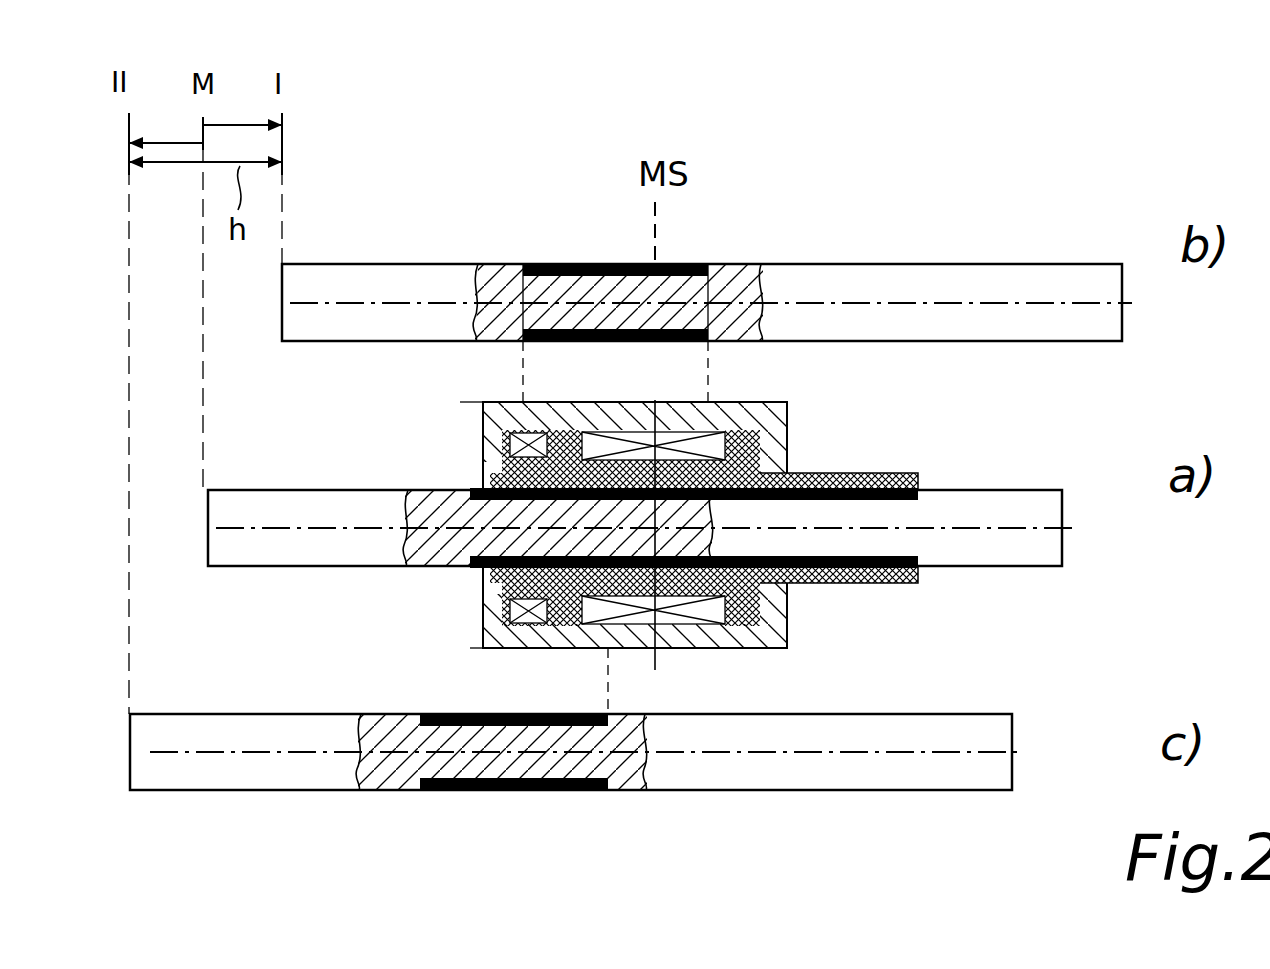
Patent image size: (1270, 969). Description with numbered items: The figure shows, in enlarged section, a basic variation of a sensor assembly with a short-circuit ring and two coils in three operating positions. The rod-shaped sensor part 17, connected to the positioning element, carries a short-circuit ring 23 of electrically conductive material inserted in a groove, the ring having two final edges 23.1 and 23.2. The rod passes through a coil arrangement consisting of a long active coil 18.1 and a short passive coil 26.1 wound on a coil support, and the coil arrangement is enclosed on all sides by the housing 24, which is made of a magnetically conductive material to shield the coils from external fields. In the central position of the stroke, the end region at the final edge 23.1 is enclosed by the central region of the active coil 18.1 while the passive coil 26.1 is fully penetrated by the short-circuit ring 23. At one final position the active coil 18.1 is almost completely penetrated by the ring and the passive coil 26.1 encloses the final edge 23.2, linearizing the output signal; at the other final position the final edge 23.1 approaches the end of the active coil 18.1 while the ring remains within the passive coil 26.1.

The rod-shaped sensor part 17 is at (240, 545).
The short-circuit ring 23 is at (696, 258).
The final edge 23.1 is at (708, 263).
The final edge 23.2 is at (523, 263).
The housing 24 is at (650, 537).
The passive coil 26.1 is at (503, 457).
The active coil 18.1 is at (737, 410).